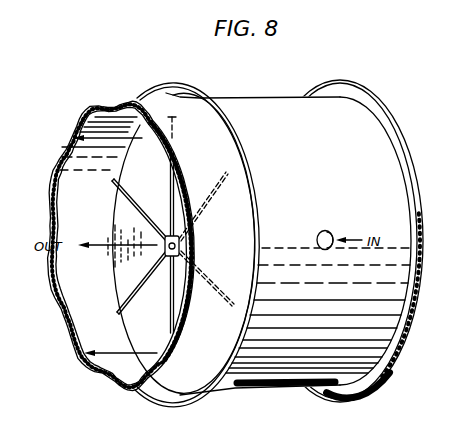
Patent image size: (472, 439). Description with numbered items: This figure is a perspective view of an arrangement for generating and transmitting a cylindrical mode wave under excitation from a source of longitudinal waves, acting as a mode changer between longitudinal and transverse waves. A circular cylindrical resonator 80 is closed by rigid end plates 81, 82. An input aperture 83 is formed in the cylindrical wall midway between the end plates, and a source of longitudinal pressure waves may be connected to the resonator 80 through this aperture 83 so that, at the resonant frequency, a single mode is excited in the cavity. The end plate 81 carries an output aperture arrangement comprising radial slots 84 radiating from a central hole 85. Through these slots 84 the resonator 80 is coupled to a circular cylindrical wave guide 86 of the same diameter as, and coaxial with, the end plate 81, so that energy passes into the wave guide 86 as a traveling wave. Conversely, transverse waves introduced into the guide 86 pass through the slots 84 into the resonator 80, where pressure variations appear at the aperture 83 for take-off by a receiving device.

The circular cylindrical resonator 80 is at (280, 368).
The end plate 81 is at (124, 286).
The end plate 82 is at (393, 121).
The input aperture 83 is at (329, 230).
The radial slots 84 is at (172, 202).
The central hole 85 is at (180, 247).
The circular cylindrical wave guide 86 is at (186, 123).